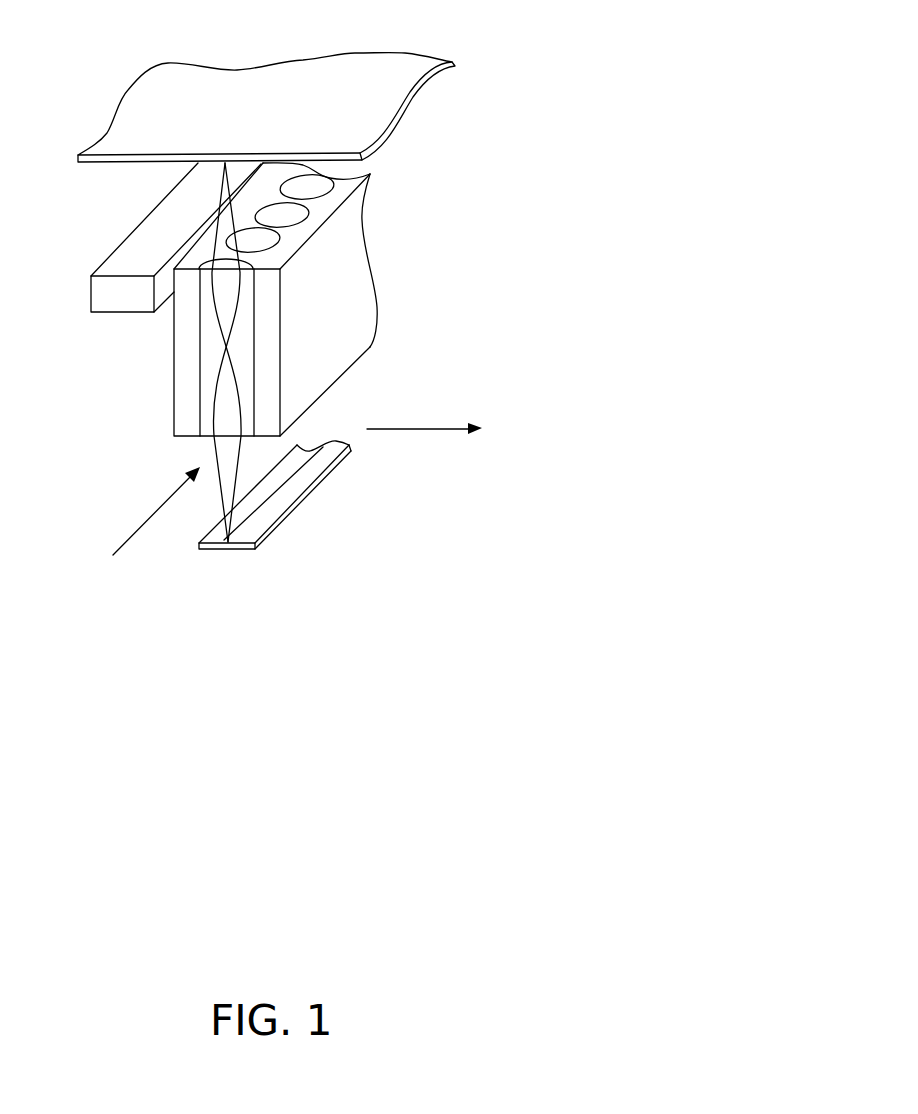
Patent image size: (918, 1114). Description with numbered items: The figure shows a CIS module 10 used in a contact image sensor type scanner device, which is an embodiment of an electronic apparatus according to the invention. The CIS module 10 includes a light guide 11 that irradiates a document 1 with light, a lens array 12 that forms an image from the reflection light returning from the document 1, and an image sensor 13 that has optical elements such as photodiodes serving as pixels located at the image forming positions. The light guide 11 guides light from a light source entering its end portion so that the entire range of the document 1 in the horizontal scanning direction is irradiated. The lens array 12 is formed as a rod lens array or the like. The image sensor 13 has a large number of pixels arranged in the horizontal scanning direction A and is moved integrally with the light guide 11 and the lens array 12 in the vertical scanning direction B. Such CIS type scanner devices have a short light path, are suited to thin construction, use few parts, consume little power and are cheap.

The document 1 is at (282, 80).
The CIS module 10 is at (545, 99).
The light guide 11 is at (132, 293).
The lens array 12 is at (357, 315).
The image sensor 13 is at (299, 490).